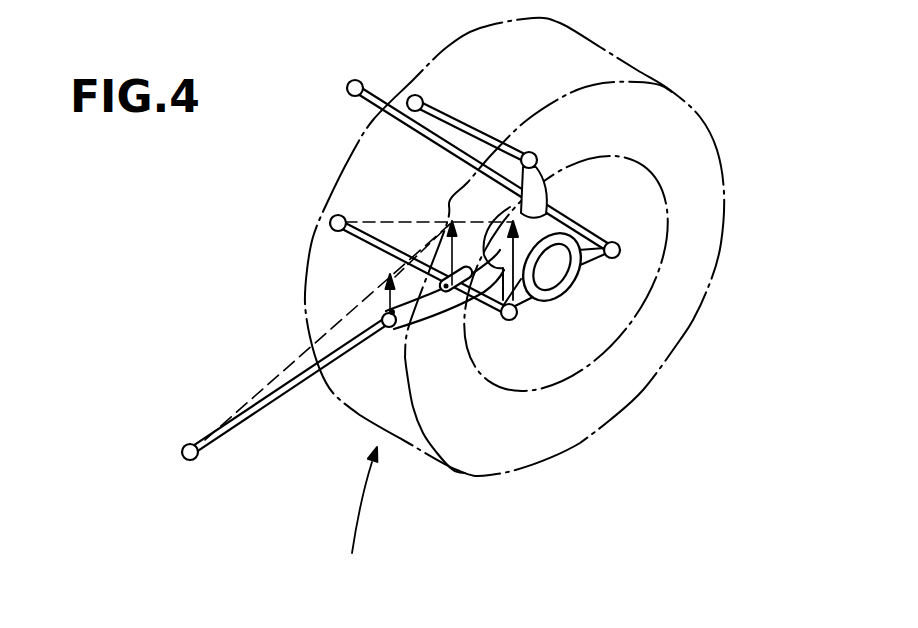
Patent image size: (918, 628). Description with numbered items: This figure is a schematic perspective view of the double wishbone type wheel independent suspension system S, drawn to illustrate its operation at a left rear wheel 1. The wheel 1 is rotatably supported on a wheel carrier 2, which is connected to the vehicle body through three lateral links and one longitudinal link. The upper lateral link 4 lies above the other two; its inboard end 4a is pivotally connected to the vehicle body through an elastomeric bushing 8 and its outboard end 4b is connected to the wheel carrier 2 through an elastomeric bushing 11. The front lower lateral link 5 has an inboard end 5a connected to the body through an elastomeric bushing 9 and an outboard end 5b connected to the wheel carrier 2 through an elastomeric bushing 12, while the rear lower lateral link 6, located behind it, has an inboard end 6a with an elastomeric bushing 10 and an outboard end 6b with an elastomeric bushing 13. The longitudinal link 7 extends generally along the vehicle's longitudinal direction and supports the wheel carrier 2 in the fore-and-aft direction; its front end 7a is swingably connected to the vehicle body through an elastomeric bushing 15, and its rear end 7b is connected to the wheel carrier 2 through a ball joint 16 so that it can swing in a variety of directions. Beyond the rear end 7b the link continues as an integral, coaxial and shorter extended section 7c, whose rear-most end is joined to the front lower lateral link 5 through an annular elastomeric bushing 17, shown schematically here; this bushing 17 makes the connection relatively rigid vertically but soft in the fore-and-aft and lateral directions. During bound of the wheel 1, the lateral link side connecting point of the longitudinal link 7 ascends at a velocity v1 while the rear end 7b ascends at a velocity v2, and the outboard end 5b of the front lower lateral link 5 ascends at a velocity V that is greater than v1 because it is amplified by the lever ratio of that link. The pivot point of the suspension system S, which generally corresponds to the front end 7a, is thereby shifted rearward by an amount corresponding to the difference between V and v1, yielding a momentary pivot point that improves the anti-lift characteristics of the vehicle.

The wheel 1 is at (631, 63).
The wheel carrier 2 is at (557, 300).
The upper lateral link 4 is at (473, 131).
The inboard end of upper lateral link 4a is at (463, 87).
The elastomeric bushing 8 is at (423, 97).
The outboard end of upper lateral link 4b is at (578, 147).
The elastomeric bushing 11 is at (537, 156).
The front lower lateral link 5 is at (361, 243).
The inboard end of front lower lateral link 5a is at (281, 210).
The elastomeric bushing 9 is at (330, 219).
The outboard end of front lower lateral link 5b is at (529, 342).
The elastomeric bushing 12 is at (508, 321).
The rear lower lateral link 6 is at (573, 216).
The inboard end of rear lower lateral link 6a is at (314, 61).
The elastomeric bushing 10 is at (349, 84).
The outboard end of rear lower lateral link 6b is at (693, 302).
The elastomeric bushing 13 is at (619, 258).
The longitudinal link 7 is at (290, 393).
The front end of longitudinal link 7a is at (235, 497).
The elastomeric bushing 15 is at (197, 460).
The rear end of longitudinal link 7b is at (450, 375).
The ball joint 16 is at (390, 328).
The extended section 7c is at (392, 312).
The elastomeric bushing 17 is at (452, 317).
The velocity V is at (512, 220).
The velocity v1 is at (455, 248).
The velocity v2 is at (387, 297).
The wheel independent suspension system S is at (361, 516).